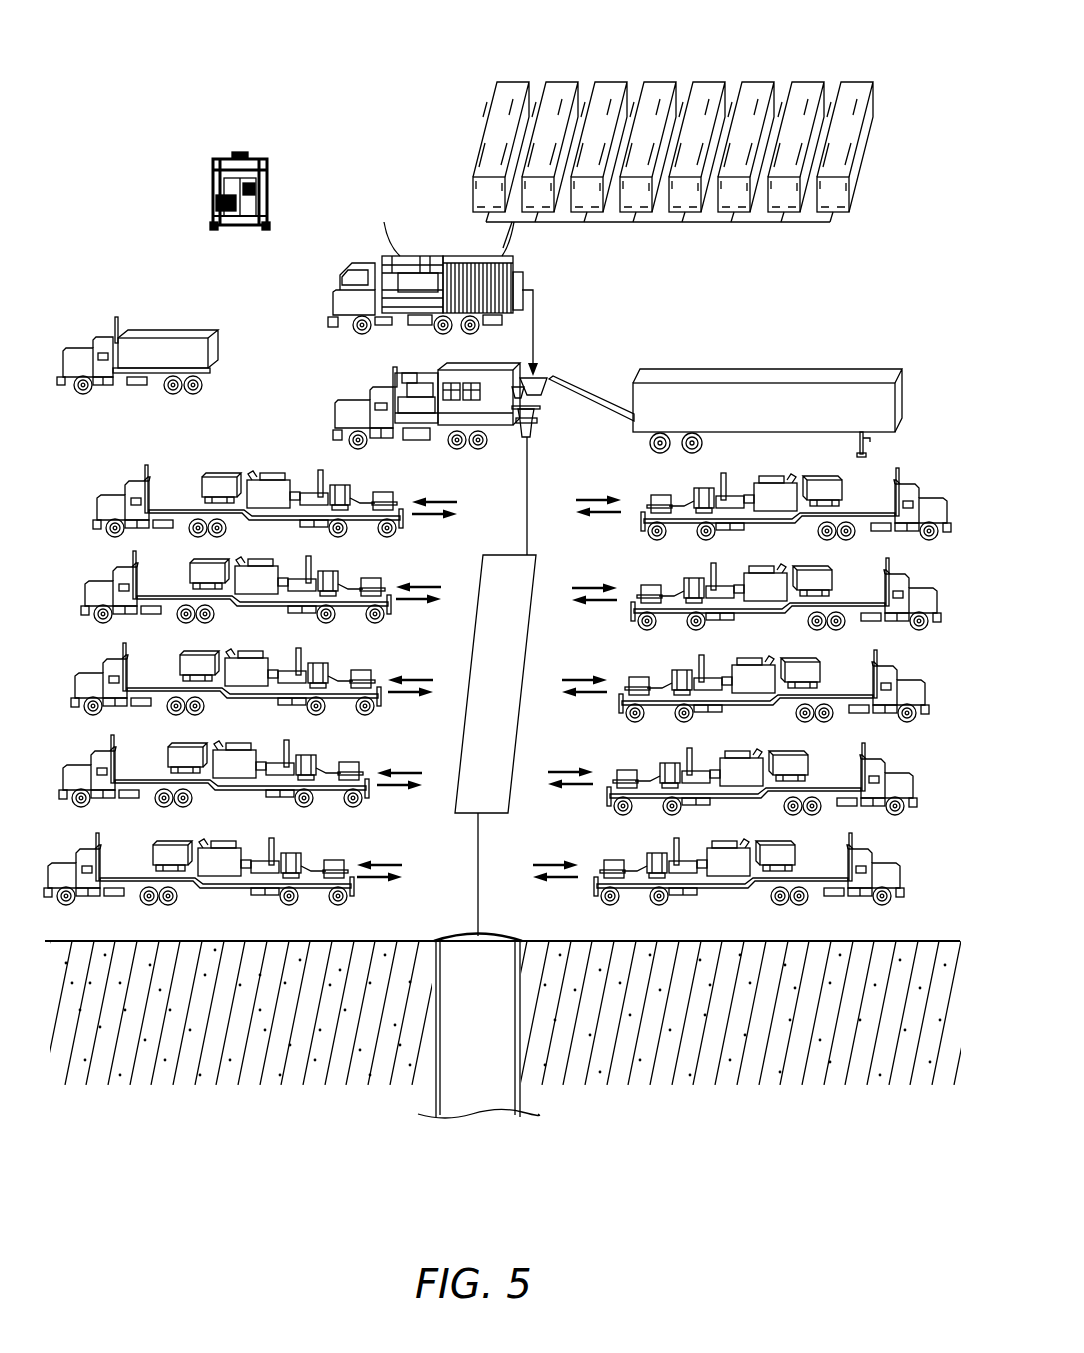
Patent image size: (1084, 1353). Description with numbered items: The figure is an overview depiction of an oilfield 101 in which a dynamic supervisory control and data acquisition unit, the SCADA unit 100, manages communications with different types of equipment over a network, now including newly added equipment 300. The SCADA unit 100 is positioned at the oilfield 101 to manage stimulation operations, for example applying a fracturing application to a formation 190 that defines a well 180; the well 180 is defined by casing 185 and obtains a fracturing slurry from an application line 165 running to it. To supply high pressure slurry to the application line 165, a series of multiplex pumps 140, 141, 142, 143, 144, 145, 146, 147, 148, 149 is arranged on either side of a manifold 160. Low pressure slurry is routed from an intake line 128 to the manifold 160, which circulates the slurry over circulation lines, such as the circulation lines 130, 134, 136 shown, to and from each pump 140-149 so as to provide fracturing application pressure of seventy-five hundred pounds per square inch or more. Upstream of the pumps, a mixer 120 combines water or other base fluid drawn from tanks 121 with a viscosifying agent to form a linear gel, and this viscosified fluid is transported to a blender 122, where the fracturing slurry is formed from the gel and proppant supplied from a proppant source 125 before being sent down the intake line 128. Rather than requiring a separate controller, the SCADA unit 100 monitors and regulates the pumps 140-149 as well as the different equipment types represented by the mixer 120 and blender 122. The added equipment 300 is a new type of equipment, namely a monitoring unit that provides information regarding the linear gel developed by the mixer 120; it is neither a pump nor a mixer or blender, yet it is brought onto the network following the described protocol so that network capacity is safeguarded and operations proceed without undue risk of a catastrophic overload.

The dynamic SCADA unit 100 is at (180, 328).
The oilfield 101 is at (203, 55).
The mixer 120 is at (395, 247).
The tanks 121 is at (703, 42).
The blender 122 is at (352, 396).
The proppant source 125 is at (765, 369).
The intake line 128 is at (531, 490).
The circulation line 130 is at (430, 490).
The circulation line 134 is at (380, 855).
The circulation line 136 is at (601, 568).
The multiplex pump 140 is at (271, 466).
The multiplex pump 141 is at (254, 552).
The multiplex pump 142 is at (246, 648).
The multiplex pump 143 is at (234, 741).
The multiplex pump 144 is at (220, 830).
The multiplex pump 145 is at (703, 480).
The multiplex pump 146 is at (731, 574).
The multiplex pump 147 is at (718, 664).
The multiplex pump 148 is at (708, 755).
The multiplex pump 149 is at (698, 849).
The manifold 160 is at (521, 693).
The application line 165 is at (480, 868).
The well 180 is at (465, 1055).
The casing 185 is at (518, 1055).
The formation 190 is at (241, 1030).
The new equipment 300 is at (286, 132).